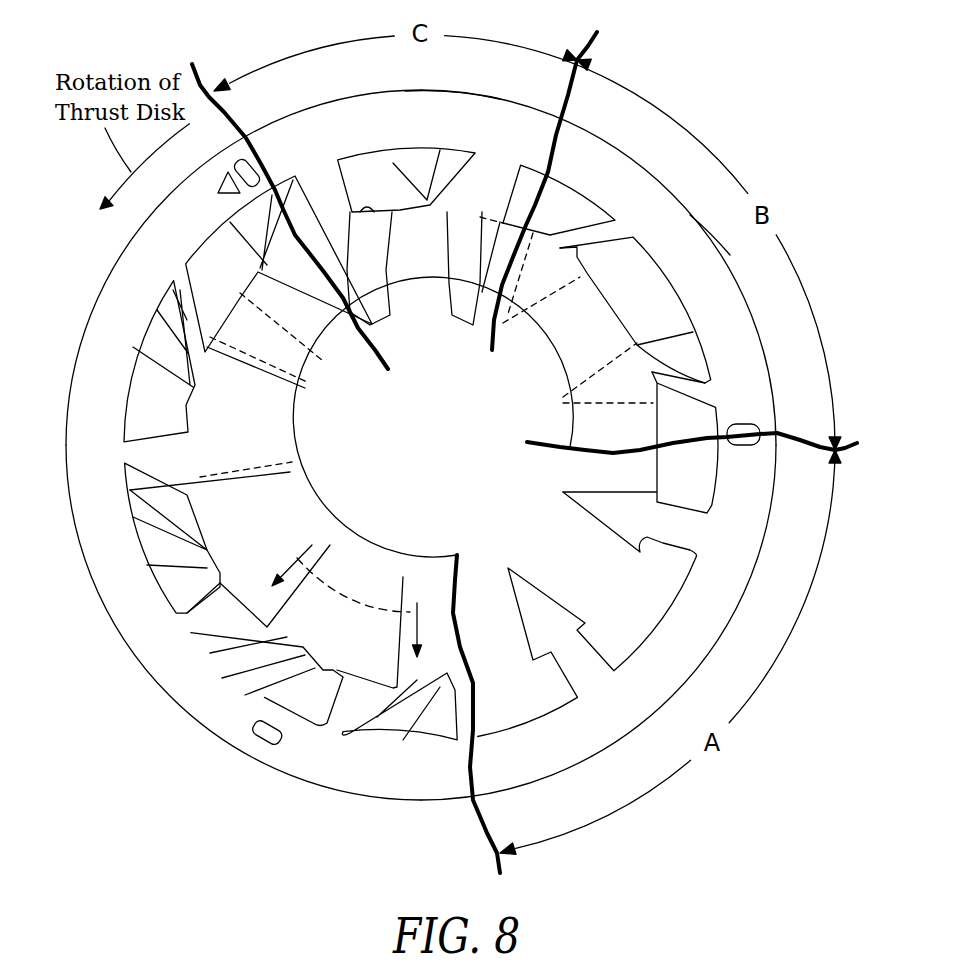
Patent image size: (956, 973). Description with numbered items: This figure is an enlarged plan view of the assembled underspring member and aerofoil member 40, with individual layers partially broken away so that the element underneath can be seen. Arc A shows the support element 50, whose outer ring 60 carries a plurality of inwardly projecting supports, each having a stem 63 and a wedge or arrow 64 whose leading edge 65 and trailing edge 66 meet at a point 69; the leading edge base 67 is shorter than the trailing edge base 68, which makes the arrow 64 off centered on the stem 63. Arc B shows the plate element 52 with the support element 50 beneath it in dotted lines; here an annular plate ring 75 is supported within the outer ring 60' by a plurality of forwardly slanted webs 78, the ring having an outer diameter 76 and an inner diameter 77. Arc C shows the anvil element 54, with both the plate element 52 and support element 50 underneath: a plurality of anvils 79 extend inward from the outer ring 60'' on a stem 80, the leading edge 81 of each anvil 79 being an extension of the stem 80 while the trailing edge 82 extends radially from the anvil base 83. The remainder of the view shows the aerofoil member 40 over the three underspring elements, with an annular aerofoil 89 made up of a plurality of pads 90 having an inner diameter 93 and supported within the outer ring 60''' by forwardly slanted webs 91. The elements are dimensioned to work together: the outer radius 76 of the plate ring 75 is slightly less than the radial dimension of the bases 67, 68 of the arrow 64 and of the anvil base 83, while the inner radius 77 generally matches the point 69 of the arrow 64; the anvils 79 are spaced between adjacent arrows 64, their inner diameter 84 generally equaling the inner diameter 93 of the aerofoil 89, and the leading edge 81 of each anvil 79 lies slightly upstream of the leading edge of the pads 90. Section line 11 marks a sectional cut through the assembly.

The section line 11- 11 is at (343, 613).
The aerofoil member 40 is at (170, 710).
The support element 50 is at (620, 743).
The plate element 52 is at (706, 229).
The anvil element 54 is at (474, 92).
The outer ring 60 is at (423, 622).
The outer ring 60' is at (616, 562).
The outer ring 60'' is at (590, 245).
The outer ring 60''' is at (243, 404).
The stem 63 is at (392, 160).
The arrow 64 is at (568, 521).
The leading edge 65 is at (622, 490).
The trailing edge 66 is at (608, 537).
The leading edge base 67 is at (670, 492).
The trailing edge base 68 is at (643, 560).
The point 69 is at (563, 492).
The annular plate ring 75 is at (560, 339).
The outer diameter 76 is at (612, 303).
The inner diameter 77 is at (545, 356).
The forwardly slanted webs 78 is at (388, 207).
The anvil 79 is at (493, 297).
The stem 80 is at (318, 728).
The leading edge 81 is at (443, 303).
The trailing edge 82 is at (396, 320).
The anvil base 83 is at (372, 212).
The inner diameter 84 is at (458, 322).
The annular aerofoil 89 is at (205, 568).
The pads 90 is at (240, 527).
The forwardly slanted webs 91 is at (358, 743).
The inner diameter 93 is at (367, 563).